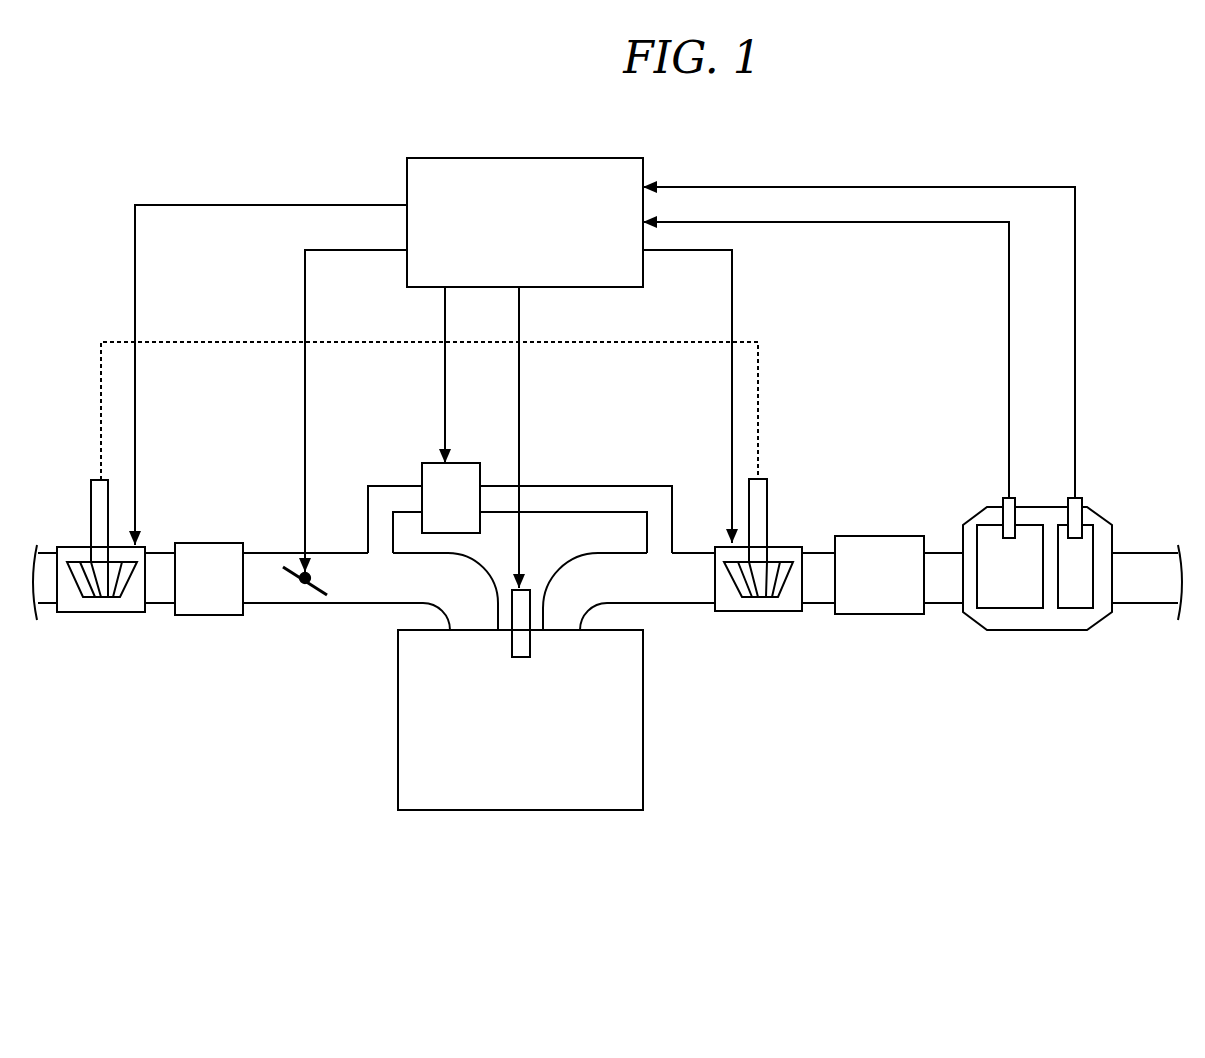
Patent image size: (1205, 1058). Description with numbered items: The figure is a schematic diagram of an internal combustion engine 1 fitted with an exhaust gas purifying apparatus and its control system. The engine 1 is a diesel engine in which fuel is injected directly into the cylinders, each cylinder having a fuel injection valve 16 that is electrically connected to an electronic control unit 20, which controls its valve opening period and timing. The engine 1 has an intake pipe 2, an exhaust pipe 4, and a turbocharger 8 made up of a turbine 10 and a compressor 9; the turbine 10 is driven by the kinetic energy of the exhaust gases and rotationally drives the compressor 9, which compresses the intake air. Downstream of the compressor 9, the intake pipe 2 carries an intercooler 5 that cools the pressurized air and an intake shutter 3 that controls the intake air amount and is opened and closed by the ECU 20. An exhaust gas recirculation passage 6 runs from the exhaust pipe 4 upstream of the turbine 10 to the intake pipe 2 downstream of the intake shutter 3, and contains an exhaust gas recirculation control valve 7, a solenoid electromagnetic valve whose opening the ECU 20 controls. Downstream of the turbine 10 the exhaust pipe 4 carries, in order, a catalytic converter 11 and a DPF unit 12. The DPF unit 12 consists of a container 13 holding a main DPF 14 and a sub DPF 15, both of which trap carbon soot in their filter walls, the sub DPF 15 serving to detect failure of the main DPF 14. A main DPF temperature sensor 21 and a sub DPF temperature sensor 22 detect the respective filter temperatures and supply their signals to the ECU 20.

The internal combustion engine 1 is at (508, 810).
The intake pipe 2 is at (273, 553).
The intake shutter 3 is at (305, 590).
The exhaust pipe 4 is at (665, 603).
The intercooler 5 is at (208, 541).
The exhaust gas recirculation passage 6 is at (592, 484).
The exhaust gas recirculation control valve 7 is at (475, 462).
The turbocharger 8 is at (78, 500).
The compressor 9 is at (108, 612).
The turbine 10 is at (757, 611).
The catalytic converter 11 is at (877, 535).
The DPF unit 12 is at (911, 446).
The container 13 is at (995, 505).
The main DPF 14 is at (1005, 608).
The sub DPF 15 is at (1075, 608).
The fuel injection valve 16 is at (528, 588).
The electronic control unit 20 is at (468, 158).
The main DPF temperature sensor 21 is at (1015, 500).
The sub DPF temperature sensor 22 is at (1082, 500).